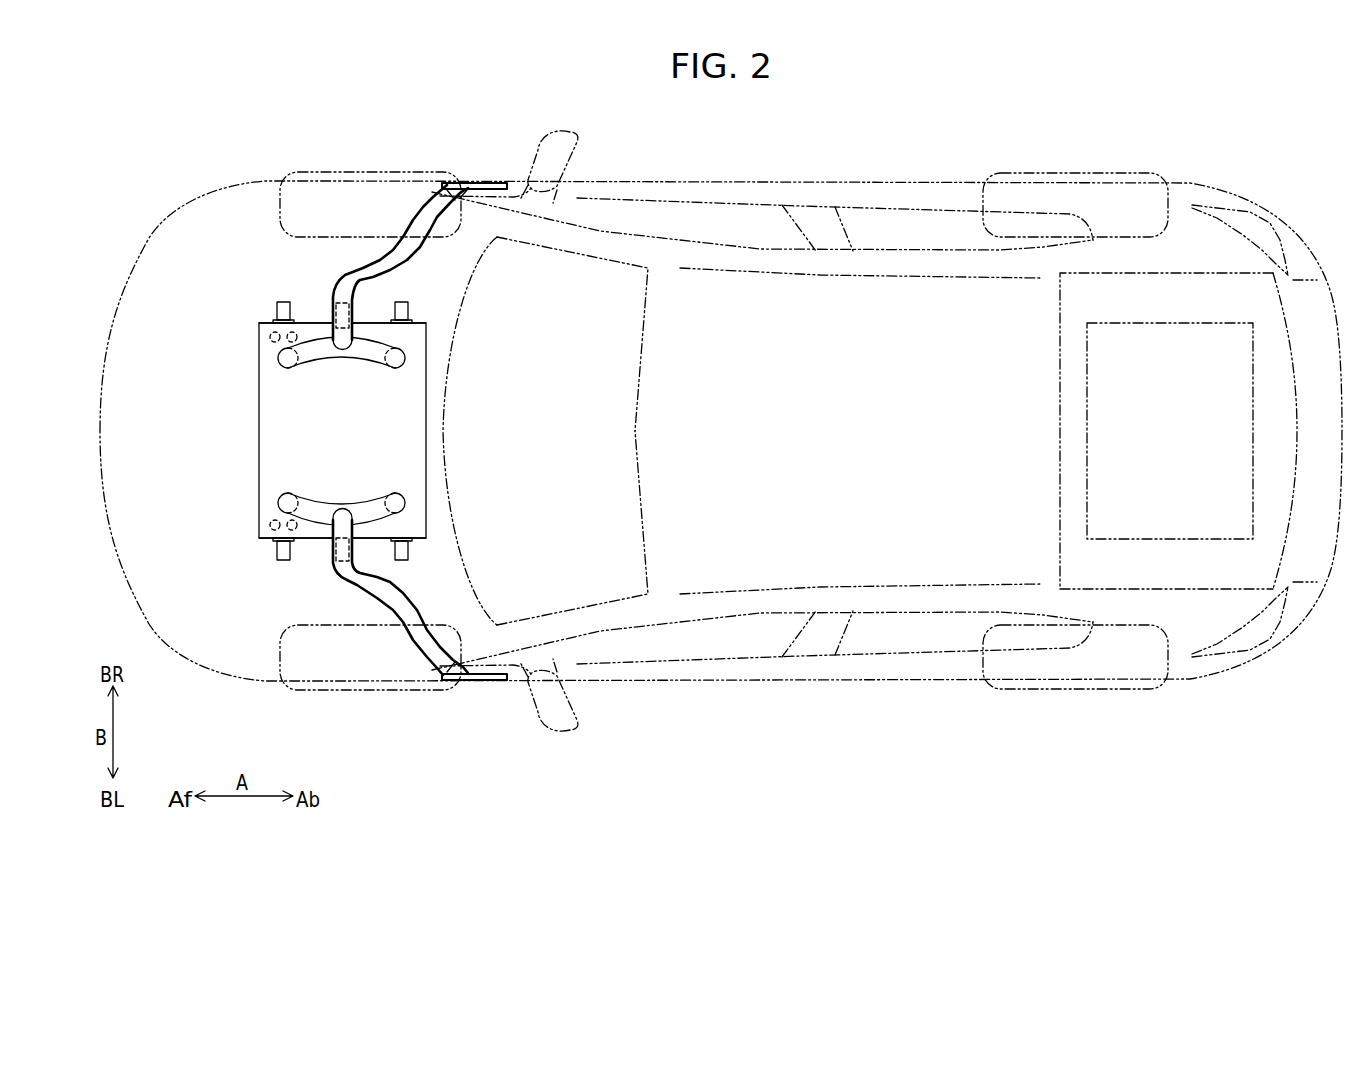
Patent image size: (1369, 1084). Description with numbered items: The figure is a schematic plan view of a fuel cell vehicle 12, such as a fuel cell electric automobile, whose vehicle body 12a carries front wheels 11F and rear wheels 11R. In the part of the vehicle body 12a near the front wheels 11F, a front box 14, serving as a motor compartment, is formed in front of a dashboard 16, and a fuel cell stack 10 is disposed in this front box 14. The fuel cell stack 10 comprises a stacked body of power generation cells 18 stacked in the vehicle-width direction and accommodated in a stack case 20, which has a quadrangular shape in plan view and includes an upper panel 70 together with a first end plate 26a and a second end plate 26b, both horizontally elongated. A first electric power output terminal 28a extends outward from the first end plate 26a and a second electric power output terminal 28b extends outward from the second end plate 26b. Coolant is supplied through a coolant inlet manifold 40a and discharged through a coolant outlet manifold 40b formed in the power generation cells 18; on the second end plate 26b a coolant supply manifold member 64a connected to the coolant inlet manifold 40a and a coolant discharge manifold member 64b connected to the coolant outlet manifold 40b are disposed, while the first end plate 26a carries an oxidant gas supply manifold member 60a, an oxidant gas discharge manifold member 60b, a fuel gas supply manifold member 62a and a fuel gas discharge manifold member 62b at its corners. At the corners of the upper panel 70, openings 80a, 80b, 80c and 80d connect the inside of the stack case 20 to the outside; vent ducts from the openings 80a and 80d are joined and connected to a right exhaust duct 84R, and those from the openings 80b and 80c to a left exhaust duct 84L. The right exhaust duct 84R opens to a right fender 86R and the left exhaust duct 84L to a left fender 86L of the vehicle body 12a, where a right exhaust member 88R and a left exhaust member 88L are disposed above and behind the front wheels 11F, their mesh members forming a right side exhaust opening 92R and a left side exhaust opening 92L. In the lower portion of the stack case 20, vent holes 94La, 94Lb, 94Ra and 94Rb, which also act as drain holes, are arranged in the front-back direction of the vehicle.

The fuel cell vehicle 12 is at (721, 436).
The vehicle body 12a is at (721, 399).
The front box 14 is at (179, 239).
The front wheels 11F is at (326, 172).
The rear wheels 11R is at (1026, 172).
The fuel cell stack 10 is at (684, 430).
The dashboard 16 is at (447, 405).
The power generation cells 18 is at (404, 426).
The stack case 20 is at (428, 447).
The upper panel 70 is at (375, 430).
The first end plate 26a is at (427, 540).
The second end plate 26b is at (417, 324).
The first electric power output terminal 28a is at (345, 500).
The second electric power output terminal 28b is at (345, 358).
The opening 80a is at (282, 360).
The opening 80b is at (394, 490).
The opening 80c is at (280, 502).
The opening 80d is at (396, 372).
The right exhaust duct 84R is at (382, 270).
The left exhaust duct 84L is at (380, 590).
The right fender 86R is at (1198, 185).
The left fender 86L is at (1197, 679).
The right exhaust member 88R is at (493, 184).
The left exhaust member 88L is at (490, 685).
The right side exhaust opening 92R is at (458, 203).
The left side exhaust opening 92L is at (460, 678).
The vent hole 94Ra is at (270, 338).
The vent hole 94Rb is at (293, 333).
The vent hole 94La is at (268, 525).
The vent hole 94Lb is at (293, 531).
The coolant supply manifold member 64a is at (481, 295).
The coolant discharge manifold member 64b is at (230, 307).
The coolant inlet manifold 40a is at (410, 312).
The coolant outlet manifold 40b is at (278, 312).
The fuel gas supply manifold member 62a is at (229, 556).
The fuel gas discharge manifold member 62b is at (405, 555).
The oxidant gas supply manifold member 60a is at (483, 566).
The oxidant gas discharge manifold member 60b is at (278, 555).